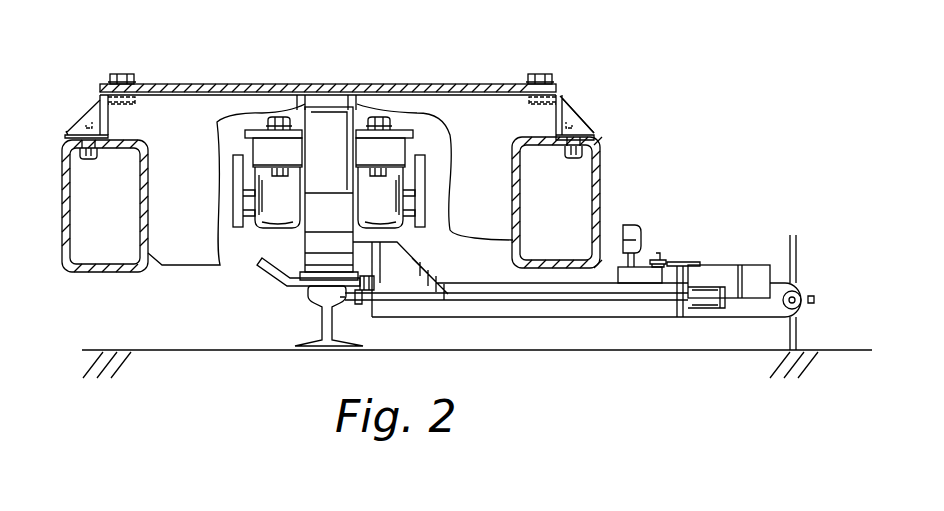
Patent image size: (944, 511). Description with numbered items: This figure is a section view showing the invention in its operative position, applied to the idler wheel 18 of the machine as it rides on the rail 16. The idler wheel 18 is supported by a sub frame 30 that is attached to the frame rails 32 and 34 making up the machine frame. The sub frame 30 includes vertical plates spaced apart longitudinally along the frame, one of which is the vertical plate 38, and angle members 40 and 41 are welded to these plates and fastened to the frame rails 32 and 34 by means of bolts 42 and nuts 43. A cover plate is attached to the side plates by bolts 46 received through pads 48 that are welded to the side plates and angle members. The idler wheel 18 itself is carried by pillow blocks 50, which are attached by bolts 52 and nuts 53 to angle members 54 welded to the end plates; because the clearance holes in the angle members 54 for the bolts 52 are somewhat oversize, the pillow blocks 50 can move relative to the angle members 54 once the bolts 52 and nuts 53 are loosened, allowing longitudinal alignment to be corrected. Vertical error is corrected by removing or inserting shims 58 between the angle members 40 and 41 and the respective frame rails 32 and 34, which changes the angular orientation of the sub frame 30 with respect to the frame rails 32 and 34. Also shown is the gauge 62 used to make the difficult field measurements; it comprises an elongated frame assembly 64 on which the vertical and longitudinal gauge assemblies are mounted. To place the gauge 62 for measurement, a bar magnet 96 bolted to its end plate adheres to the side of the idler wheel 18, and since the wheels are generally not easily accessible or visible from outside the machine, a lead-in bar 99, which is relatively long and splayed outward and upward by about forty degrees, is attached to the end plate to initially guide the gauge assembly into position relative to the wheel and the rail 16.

The rail 16 is at (322, 322).
The idler wheel 18 is at (306, 279).
The sub frame 30 is at (291, 80).
The frame rail 32 is at (60, 262).
The frame rail 34 is at (603, 218).
The second vertical plate 38 is at (196, 221).
The angle member 40 is at (96, 106).
The angle member 41 is at (556, 104).
The bolt 42 is at (95, 127).
The nut 43 is at (93, 152).
The bolt 46 is at (540, 76).
The pad 48 is at (128, 101).
The pillow block 50 is at (258, 228).
The bolt 52 is at (385, 114).
The nut 53 is at (252, 130).
The angle member 54 is at (345, 110).
The shim 58 is at (68, 142).
The gauge 62 is at (680, 259).
The elongated frame assembly 64 is at (532, 318).
The bar magnet 96 is at (358, 303).
The lead-in bar 99 is at (292, 285).